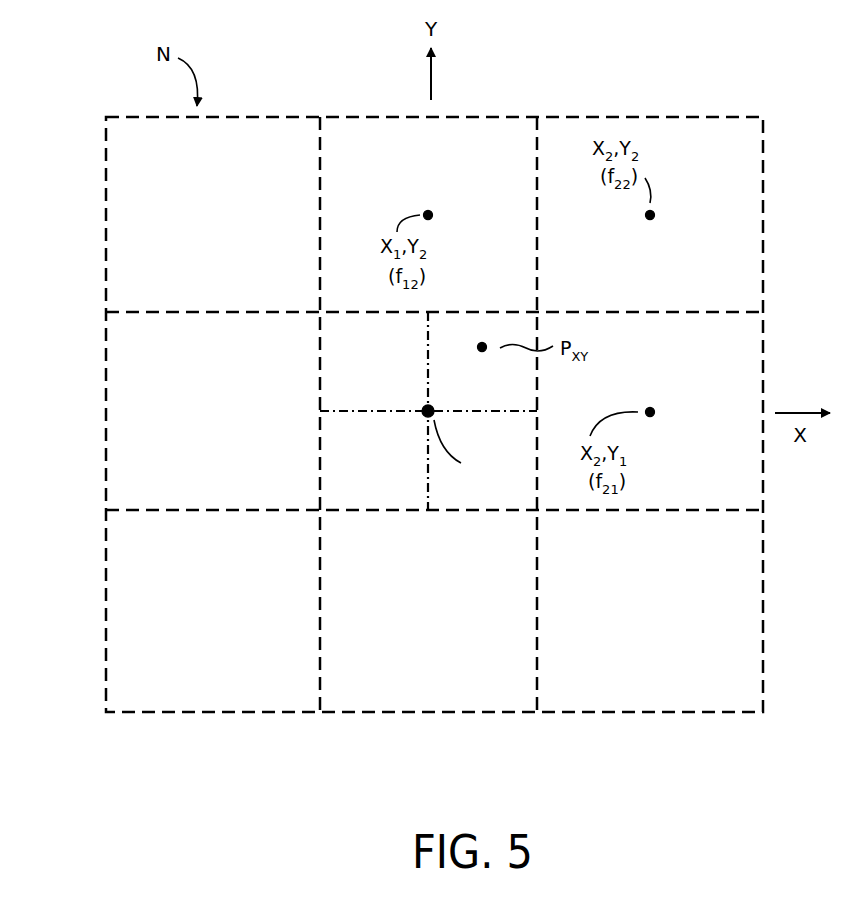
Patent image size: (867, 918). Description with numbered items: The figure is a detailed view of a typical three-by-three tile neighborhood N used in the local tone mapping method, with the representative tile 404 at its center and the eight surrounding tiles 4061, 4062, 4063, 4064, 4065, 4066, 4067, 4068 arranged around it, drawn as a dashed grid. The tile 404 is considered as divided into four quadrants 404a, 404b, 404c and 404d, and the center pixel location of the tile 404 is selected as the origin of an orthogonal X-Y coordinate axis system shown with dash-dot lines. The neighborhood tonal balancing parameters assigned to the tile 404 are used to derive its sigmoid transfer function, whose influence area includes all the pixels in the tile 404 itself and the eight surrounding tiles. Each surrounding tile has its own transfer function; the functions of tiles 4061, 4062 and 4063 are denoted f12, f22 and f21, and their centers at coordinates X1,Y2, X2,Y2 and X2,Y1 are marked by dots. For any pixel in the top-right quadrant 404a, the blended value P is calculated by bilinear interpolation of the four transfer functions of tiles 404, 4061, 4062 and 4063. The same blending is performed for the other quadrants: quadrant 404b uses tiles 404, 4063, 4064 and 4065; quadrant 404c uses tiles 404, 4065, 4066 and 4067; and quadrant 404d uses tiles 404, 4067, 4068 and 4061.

The tile 404 is at (365, 495).
The top-right quadrant 404a is at (514, 405).
The quadrant 404b is at (514, 443).
The quadrant 404c is at (401, 443).
The quadrant 404d is at (401, 405).
The tile 4061 is at (492, 134).
The tile 4062 is at (750, 229).
The tile 4063 is at (745, 489).
The tile 4064 is at (741, 690).
The tile 4065 is at (452, 692).
The tile 4066 is at (118, 649).
The tile 4067 is at (118, 398).
The tile 4068 is at (115, 201).